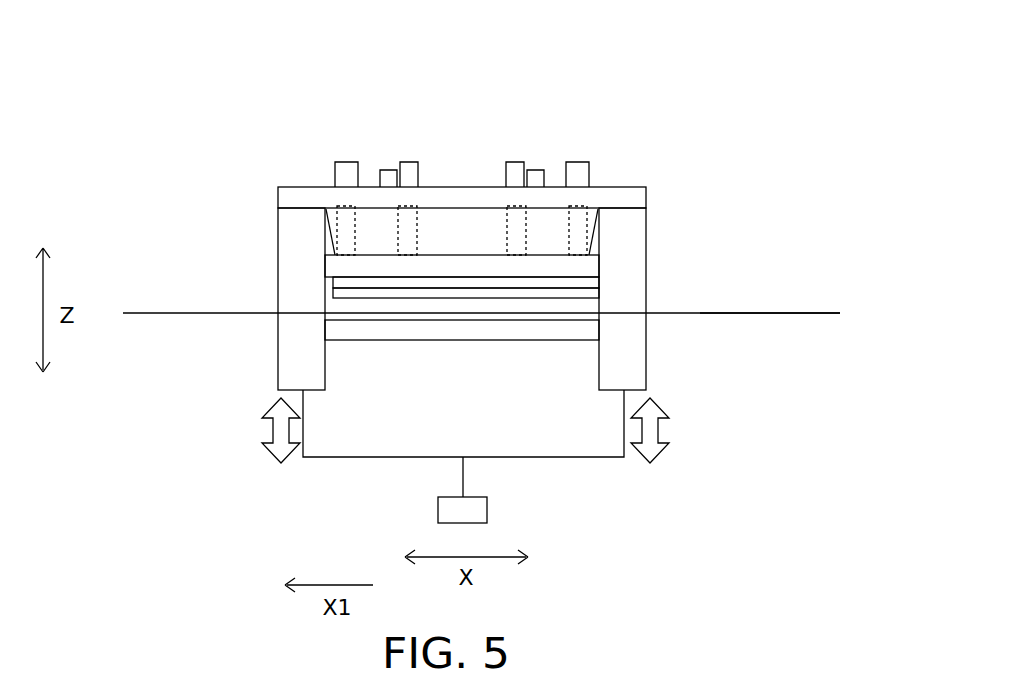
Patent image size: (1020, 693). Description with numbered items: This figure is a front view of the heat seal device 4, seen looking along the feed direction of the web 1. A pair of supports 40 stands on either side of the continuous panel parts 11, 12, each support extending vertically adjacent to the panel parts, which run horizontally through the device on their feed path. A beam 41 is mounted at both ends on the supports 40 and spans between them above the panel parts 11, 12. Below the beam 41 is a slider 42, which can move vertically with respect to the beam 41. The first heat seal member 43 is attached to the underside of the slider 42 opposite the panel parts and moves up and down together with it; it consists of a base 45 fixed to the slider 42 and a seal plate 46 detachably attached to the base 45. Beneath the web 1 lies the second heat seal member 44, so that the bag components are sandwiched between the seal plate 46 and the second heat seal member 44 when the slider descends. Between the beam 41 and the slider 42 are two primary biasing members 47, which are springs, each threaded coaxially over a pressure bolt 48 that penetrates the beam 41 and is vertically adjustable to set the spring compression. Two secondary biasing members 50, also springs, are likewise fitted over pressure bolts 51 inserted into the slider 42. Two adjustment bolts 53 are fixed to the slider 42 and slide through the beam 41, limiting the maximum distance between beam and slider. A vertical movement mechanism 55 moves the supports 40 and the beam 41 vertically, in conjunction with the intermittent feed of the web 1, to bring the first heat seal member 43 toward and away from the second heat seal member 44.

The web 1 is at (811, 310).
The heat seal device 4 is at (605, 80).
The continuous panel part 11 is at (481, 269).
The continuous panel part 12 is at (150, 310).
The support 40 is at (291, 363).
The beam 41 is at (638, 200).
The slider 42 is at (322, 260).
The first heat seal member 43 is at (536, 269).
The second heat seal member 44 is at (463, 338).
The base 45 is at (600, 282).
The seal plate 46 is at (600, 293).
The primary biasing member 47 is at (330, 218).
The pressure bolt 48 is at (348, 165).
The secondary biasing member 50 is at (423, 214).
The pressure bolt 51 is at (408, 162).
The adjustment bolt 53 is at (388, 171).
The vertical movement mechanism 55 is at (440, 507).